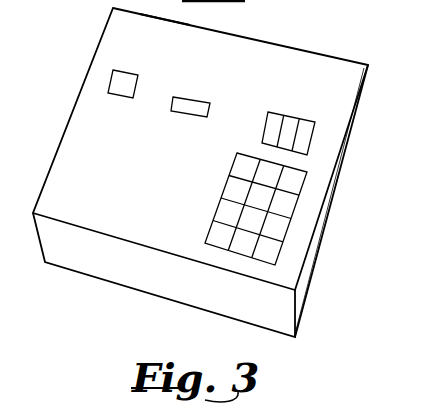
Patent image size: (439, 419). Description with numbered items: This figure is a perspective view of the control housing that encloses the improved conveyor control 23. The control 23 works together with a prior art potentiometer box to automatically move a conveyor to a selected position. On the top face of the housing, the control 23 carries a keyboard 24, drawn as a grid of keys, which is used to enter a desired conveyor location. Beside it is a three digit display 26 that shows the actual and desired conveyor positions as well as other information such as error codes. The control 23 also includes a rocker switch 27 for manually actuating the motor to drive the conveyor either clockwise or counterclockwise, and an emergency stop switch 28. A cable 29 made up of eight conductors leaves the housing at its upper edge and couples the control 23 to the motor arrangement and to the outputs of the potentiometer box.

The control 23 is at (320, 44).
The keyboard 24 is at (210, 191).
The three digit display 26 is at (303, 106).
The rocker switch 27 is at (208, 84).
The emergency stop switch 28 is at (118, 90).
The cable 29 is at (160, 8).